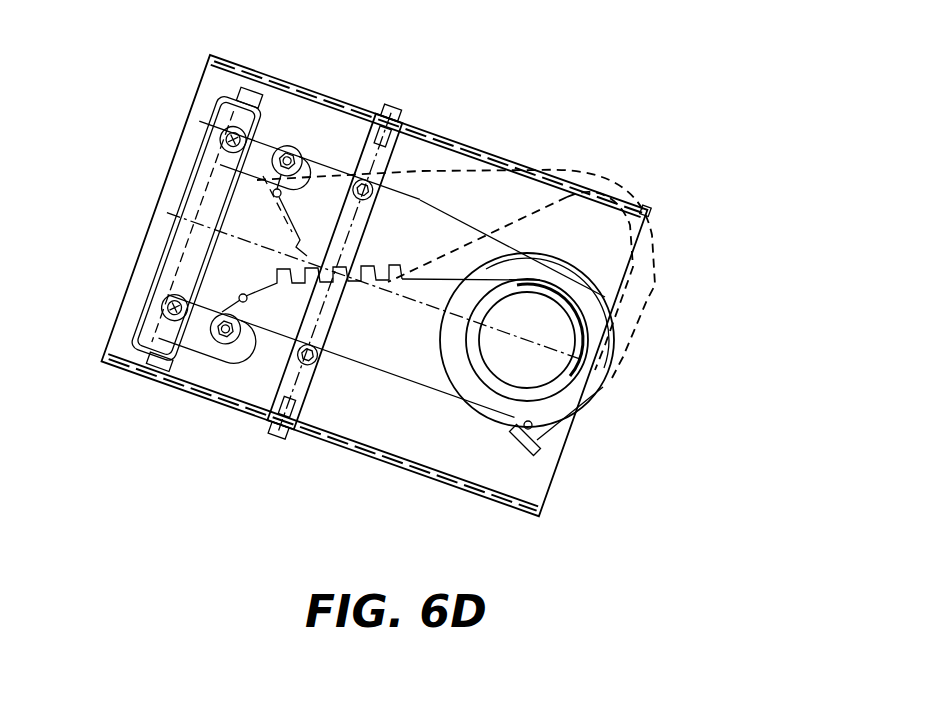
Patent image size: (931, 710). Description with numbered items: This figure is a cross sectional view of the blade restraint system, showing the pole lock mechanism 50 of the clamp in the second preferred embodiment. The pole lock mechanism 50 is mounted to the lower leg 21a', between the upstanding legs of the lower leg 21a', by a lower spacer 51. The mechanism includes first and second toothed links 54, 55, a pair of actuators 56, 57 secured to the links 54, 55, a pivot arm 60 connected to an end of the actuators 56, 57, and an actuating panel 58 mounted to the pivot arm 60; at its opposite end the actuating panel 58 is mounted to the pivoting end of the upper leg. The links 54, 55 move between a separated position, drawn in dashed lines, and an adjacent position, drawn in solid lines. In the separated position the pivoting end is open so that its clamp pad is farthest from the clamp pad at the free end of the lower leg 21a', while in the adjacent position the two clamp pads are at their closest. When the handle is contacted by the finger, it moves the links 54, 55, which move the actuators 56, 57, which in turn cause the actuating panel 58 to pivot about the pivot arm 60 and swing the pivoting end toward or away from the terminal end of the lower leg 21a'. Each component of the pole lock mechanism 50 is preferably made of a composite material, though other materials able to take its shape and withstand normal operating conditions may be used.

The pole lock mechanism 50 is at (706, 265).
The lower spacer 51 is at (391, 147).
The lower leg 21a' is at (322, 432).
The first toothed link 54 is at (420, 387).
The second toothed link 55 is at (640, 297).
The actuator 56 is at (176, 372).
The actuator 57 is at (258, 150).
The actuating panel 58 is at (193, 188).
The pivot arm 60 is at (190, 240).